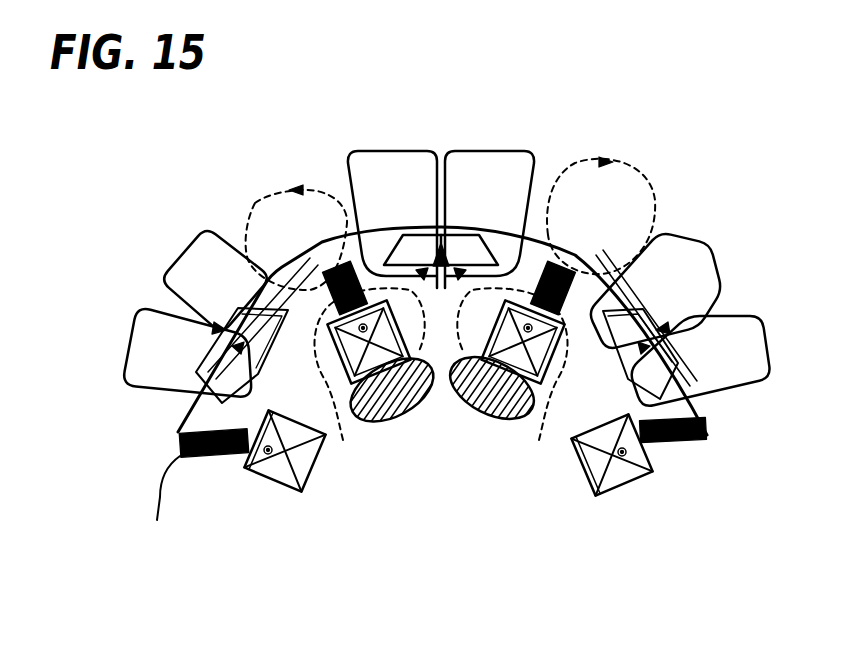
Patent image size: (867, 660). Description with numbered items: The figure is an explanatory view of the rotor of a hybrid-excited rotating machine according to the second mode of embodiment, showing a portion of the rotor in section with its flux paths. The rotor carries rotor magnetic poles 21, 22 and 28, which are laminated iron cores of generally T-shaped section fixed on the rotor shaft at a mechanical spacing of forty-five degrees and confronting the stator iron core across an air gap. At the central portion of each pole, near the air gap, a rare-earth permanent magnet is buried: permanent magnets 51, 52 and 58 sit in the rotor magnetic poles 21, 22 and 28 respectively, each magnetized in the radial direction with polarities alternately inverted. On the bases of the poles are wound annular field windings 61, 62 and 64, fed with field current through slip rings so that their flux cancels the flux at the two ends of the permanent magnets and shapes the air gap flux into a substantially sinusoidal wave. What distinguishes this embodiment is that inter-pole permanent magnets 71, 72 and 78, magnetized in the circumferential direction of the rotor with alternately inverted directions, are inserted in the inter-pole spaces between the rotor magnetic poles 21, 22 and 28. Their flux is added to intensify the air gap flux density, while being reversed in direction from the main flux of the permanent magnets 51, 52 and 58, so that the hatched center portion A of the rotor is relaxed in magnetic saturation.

The rotor magnetic pole 21 is at (381, 246).
The permanent magnet 51 is at (474, 246).
The rotor magnetic pole 22 is at (622, 298).
The permanent magnet 52 is at (673, 346).
The permanent magnet 58 is at (221, 372).
The field winding 61 is at (322, 343).
The field winding 62 is at (607, 480).
The field winding 64 is at (281, 471).
The rotor magnetic pole 28 is at (186, 423).
The inter-pole permanent magnet 71 is at (330, 238).
The inter-pole permanent magnet 72 is at (565, 262).
The inter-pole permanent magnet 78 is at (150, 518).
The center portion of the rotor A is at (477, 400).